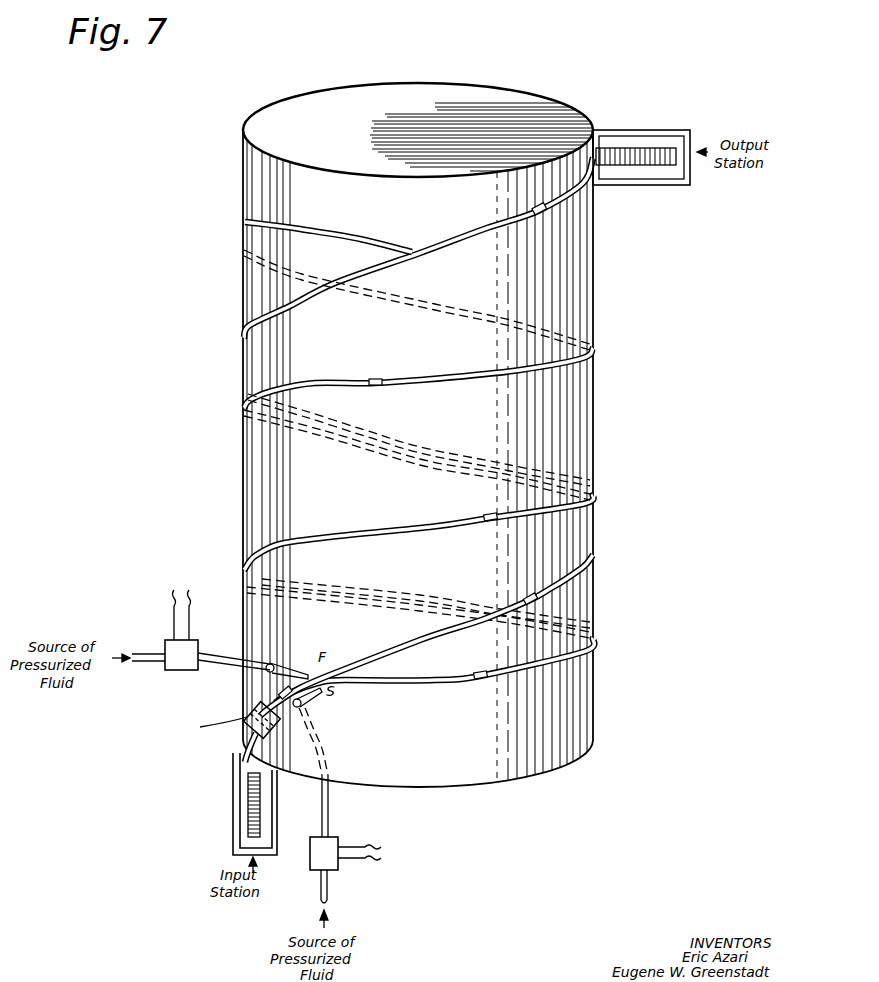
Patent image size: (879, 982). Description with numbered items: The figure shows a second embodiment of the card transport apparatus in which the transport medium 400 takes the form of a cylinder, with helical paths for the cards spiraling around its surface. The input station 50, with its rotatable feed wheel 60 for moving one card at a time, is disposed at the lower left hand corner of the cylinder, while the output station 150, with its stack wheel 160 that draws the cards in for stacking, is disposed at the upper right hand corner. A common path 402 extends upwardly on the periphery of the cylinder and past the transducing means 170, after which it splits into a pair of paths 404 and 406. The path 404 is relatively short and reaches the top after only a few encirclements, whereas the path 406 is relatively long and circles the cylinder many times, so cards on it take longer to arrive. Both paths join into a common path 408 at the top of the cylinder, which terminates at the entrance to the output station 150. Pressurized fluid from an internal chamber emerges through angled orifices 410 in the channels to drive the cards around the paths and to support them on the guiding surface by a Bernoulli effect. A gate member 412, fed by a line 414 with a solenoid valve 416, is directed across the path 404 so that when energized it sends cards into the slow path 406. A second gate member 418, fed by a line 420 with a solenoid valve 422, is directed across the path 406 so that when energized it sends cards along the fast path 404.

The transport medium 400 is at (520, 95).
The common path 402 is at (260, 747).
The path 404 is at (312, 421).
The path 406 is at (318, 385).
The common path 408 is at (490, 232).
The orifices 410 is at (542, 216).
The gate member 412 is at (289, 656).
The line 414 is at (144, 655).
The solenoid valve 416 is at (178, 662).
The gate member 418 is at (312, 701).
The line 420 is at (331, 806).
The solenoid valve 422 is at (330, 846).
The feed wheel 60 is at (248, 801).
The input station 50 is at (265, 827).
The output station 150 is at (656, 136).
The stack wheel 160 is at (625, 158).
The transducing means 170 is at (172, 732).